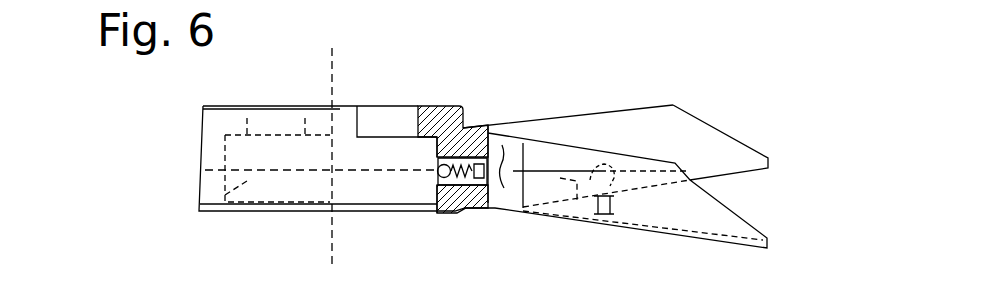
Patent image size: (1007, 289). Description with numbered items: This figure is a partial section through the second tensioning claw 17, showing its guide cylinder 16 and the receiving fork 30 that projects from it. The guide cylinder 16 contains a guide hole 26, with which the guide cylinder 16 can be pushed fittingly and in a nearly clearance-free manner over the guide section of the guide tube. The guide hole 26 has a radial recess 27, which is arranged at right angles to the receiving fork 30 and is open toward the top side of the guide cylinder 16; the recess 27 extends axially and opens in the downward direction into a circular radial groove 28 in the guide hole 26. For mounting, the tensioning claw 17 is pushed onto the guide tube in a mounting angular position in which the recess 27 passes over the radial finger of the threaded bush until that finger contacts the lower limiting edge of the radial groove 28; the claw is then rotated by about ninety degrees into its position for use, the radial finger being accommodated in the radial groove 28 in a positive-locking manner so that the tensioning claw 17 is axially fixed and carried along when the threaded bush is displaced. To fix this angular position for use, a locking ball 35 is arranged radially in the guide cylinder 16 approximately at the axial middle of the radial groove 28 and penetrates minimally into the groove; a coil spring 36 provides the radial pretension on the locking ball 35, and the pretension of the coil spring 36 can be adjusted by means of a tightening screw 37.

The guide cylinder 16 is at (212, 118).
The second tensioning claw 17 is at (212, 177).
The guide hole 26 is at (412, 98).
The radial recess 27 is at (343, 100).
The radial groove 28 is at (200, 212).
The receiving fork 30 is at (723, 223).
The locking ball 35 is at (468, 217).
The coil spring 36 is at (480, 125).
The tightening screw 37 is at (530, 117).